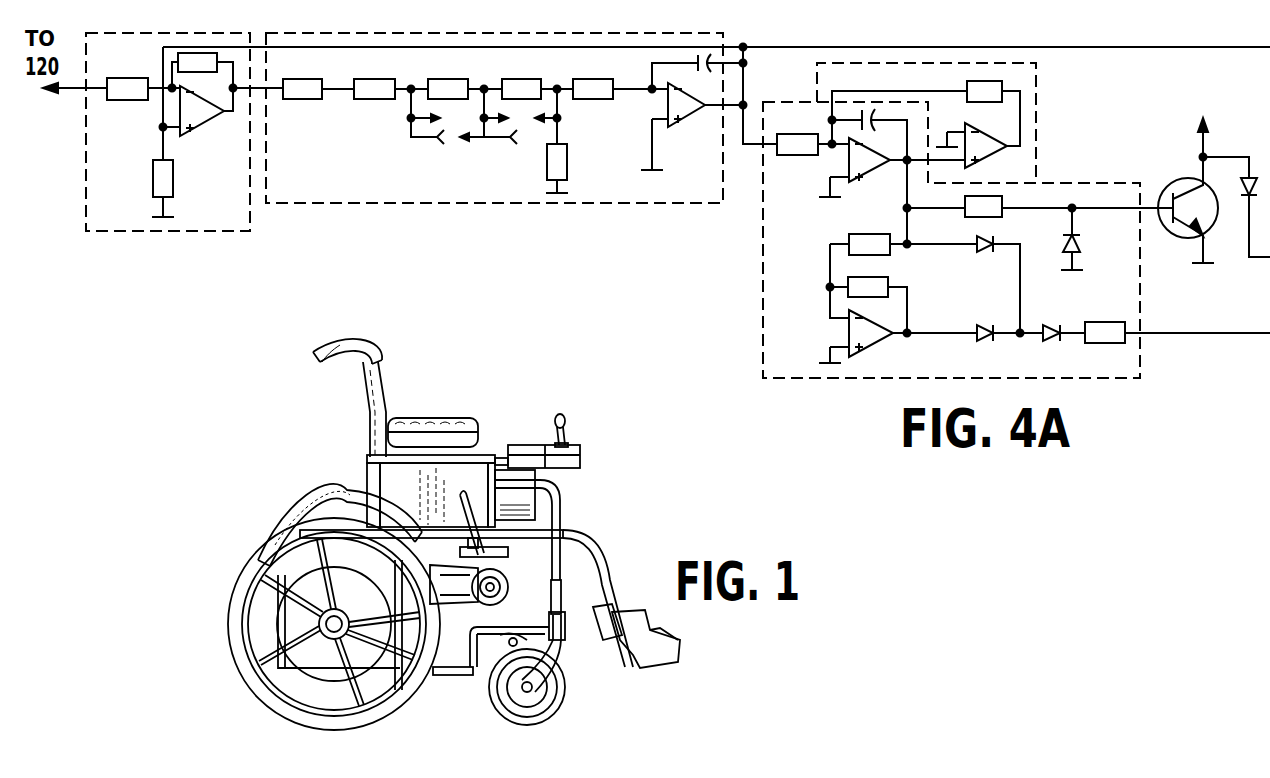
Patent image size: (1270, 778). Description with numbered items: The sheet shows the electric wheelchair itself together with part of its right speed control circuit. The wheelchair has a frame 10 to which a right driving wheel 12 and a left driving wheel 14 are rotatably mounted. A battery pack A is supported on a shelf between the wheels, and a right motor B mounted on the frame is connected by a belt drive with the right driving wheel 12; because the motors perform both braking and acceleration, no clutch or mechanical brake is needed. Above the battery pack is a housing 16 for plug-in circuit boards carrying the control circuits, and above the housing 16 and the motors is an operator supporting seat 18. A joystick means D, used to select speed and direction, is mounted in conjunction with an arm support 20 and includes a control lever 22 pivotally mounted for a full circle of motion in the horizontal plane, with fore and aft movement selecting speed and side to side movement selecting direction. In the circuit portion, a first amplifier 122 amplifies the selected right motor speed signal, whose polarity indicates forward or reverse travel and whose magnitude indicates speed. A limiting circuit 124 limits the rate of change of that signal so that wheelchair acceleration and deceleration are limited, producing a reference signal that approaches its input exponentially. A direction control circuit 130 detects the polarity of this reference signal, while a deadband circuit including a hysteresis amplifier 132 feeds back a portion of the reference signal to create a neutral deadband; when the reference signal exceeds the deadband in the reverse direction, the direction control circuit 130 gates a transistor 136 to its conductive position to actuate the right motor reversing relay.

In FIG. 1, the frame 10 is at (555, 547).
In FIG. 1, the right driving wheel 12 is at (243, 598).
In FIG. 1, the left driving wheel 14 is at (343, 502).
In FIG. 1, the housing 16 is at (315, 555).
In FIG. 1, the operator supporting seat 18 is at (530, 510).
In FIG. 1, the arm support 20 is at (480, 455).
In FIG. 1, the control lever 22 is at (568, 420).
In FIG. 1, the battery pack A is at (277, 653).
In FIG. 1, the right motor B is at (453, 593).
In FIG. 1, the joystick means D is at (600, 448).
In FIG. 4A, the first amplifier 122 is at (170, 232).
In FIG. 4A, the limiting circuit 124 is at (505, 203).
In FIG. 4A, the direction control circuit 130 is at (765, 256).
In FIG. 4A, the hysteresis amplifier 132 is at (1037, 92).
In FIG. 4A, the transistor 136 is at (1183, 182).